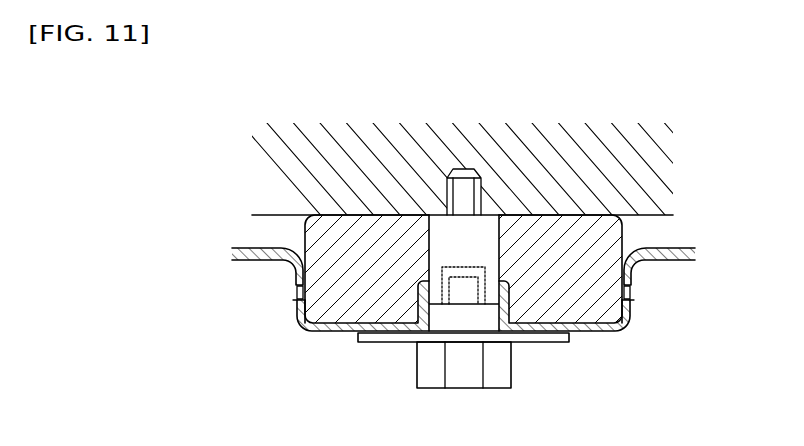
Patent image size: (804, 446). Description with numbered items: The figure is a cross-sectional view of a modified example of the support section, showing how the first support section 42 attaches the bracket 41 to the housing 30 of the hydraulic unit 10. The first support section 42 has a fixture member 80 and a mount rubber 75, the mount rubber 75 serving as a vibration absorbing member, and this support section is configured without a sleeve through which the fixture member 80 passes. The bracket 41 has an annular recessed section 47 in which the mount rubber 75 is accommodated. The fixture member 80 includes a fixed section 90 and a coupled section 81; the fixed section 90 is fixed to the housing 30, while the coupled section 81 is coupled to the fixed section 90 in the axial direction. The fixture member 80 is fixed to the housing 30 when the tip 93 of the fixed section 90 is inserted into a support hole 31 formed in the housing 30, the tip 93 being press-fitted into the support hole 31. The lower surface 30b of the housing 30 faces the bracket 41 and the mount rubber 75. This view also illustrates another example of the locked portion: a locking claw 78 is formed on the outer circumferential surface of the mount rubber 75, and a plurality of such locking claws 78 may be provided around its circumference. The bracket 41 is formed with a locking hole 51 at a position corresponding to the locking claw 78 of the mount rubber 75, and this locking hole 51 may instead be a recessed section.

The hydraulic unit 10 is at (493, 170).
The housing 30 is at (493, 178).
The lower surface of wall 30b is at (621, 215).
The support hole 31 is at (487, 152).
The tip 93 is at (472, 194).
The mount rubber 75 is at (313, 228).
The fixed section 90 is at (503, 257).
The recessed section 47 is at (463, 312).
The locking claw 78 is at (297, 299).
The bracket 41 is at (690, 256).
The locking hole 51 is at (300, 292).
The first support section 42 is at (343, 357).
The fixture member 80 is at (468, 375).
The coupled section 81 is at (397, 369).